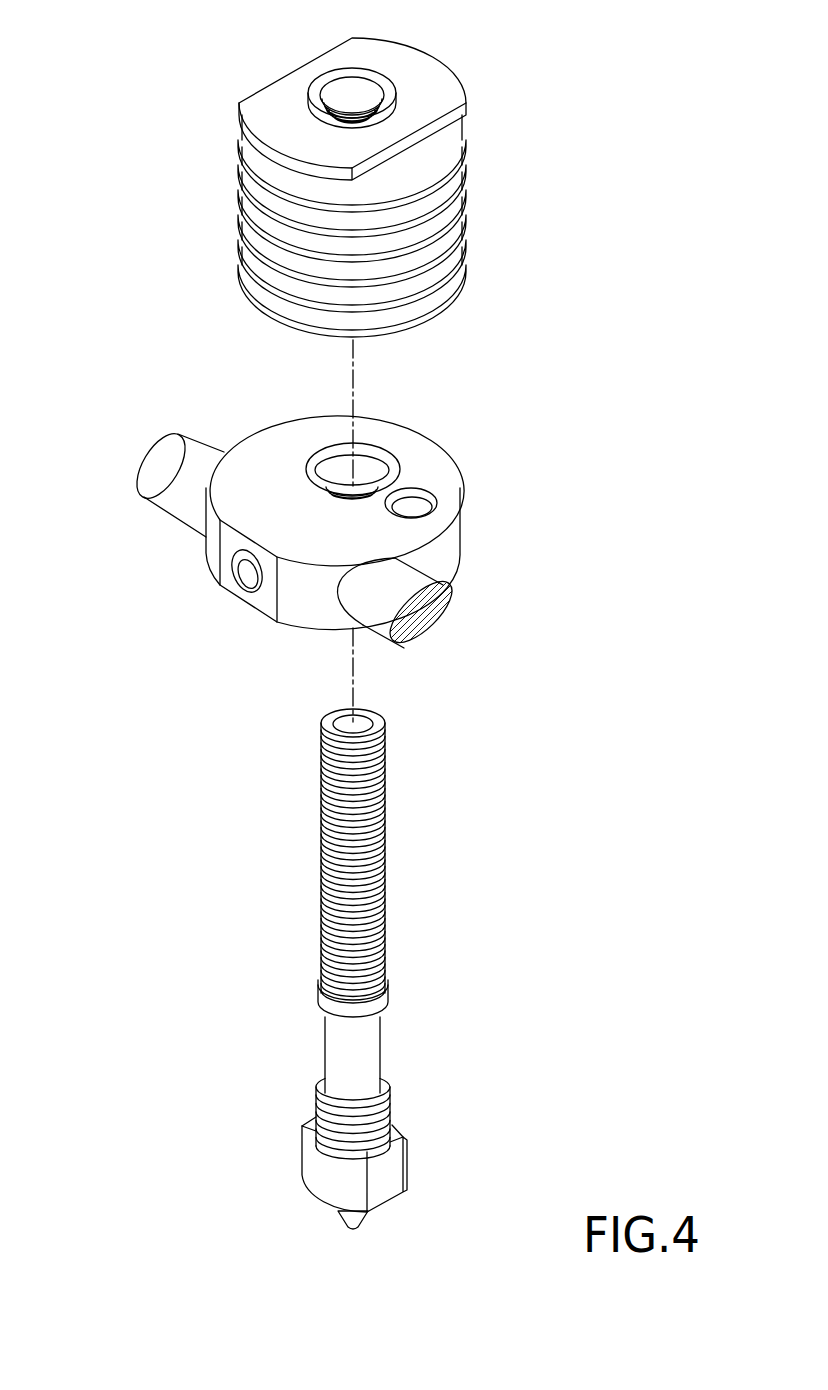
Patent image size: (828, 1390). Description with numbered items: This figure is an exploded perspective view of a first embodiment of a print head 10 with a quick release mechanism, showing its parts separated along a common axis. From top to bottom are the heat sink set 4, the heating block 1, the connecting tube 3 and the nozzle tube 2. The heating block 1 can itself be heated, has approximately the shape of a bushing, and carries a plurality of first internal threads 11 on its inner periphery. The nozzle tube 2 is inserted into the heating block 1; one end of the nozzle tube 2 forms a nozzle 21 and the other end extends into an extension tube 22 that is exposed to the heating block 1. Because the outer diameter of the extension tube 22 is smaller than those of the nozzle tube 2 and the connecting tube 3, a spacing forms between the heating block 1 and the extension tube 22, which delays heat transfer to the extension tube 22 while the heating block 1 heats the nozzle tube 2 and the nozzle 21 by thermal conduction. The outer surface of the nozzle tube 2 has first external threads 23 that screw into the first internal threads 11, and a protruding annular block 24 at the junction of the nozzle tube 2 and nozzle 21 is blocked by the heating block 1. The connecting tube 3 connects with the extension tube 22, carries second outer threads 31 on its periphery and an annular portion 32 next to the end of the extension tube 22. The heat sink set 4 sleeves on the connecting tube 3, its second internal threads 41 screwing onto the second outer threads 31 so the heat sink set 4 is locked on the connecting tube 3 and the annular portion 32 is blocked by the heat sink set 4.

The print head 10 is at (76, 77).
The heat sink set 4 is at (433, 160).
The second internal threads 41 is at (360, 88).
The heating block 1 is at (462, 530).
The first internal threads 11 is at (364, 492).
The connecting tube 3 is at (401, 960).
The second outer threads 31 is at (387, 880).
The annular portion 32 is at (343, 1010).
The nozzle tube 2 is at (400, 1098).
The extension tube 22 is at (378, 1047).
The first external threads 23 is at (390, 1122).
The protruding annular block 24 is at (315, 1170).
The nozzle 21 is at (356, 1220).